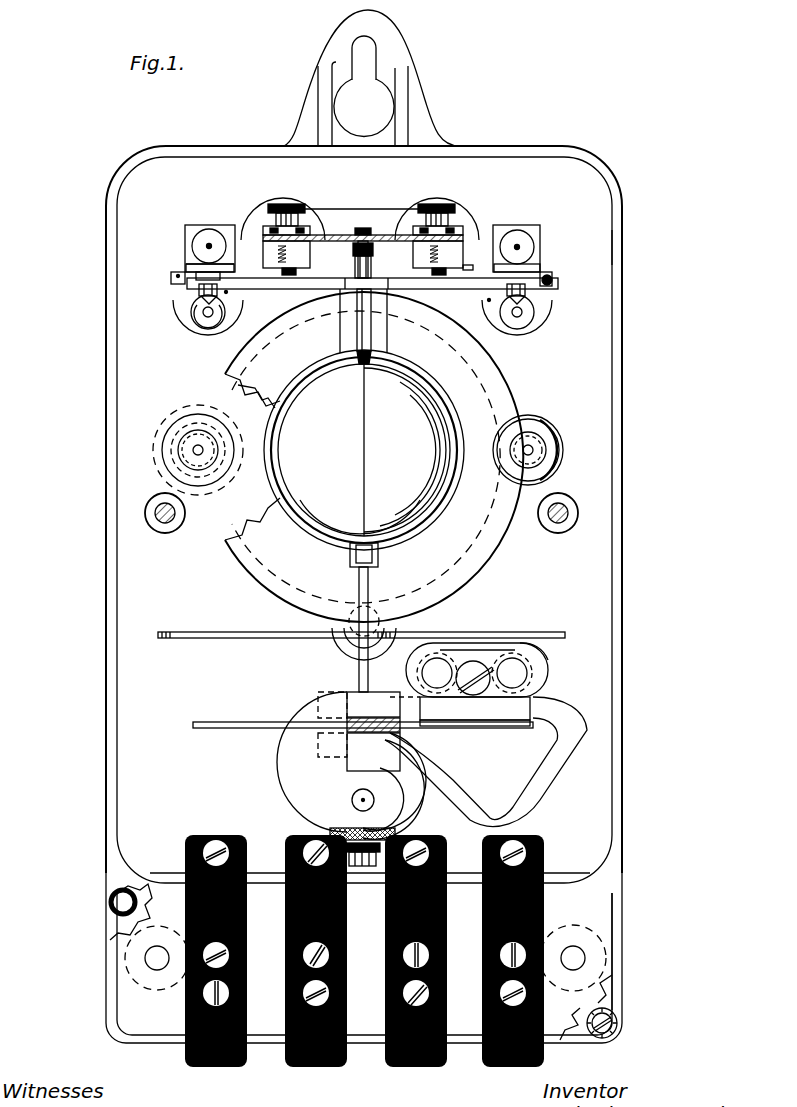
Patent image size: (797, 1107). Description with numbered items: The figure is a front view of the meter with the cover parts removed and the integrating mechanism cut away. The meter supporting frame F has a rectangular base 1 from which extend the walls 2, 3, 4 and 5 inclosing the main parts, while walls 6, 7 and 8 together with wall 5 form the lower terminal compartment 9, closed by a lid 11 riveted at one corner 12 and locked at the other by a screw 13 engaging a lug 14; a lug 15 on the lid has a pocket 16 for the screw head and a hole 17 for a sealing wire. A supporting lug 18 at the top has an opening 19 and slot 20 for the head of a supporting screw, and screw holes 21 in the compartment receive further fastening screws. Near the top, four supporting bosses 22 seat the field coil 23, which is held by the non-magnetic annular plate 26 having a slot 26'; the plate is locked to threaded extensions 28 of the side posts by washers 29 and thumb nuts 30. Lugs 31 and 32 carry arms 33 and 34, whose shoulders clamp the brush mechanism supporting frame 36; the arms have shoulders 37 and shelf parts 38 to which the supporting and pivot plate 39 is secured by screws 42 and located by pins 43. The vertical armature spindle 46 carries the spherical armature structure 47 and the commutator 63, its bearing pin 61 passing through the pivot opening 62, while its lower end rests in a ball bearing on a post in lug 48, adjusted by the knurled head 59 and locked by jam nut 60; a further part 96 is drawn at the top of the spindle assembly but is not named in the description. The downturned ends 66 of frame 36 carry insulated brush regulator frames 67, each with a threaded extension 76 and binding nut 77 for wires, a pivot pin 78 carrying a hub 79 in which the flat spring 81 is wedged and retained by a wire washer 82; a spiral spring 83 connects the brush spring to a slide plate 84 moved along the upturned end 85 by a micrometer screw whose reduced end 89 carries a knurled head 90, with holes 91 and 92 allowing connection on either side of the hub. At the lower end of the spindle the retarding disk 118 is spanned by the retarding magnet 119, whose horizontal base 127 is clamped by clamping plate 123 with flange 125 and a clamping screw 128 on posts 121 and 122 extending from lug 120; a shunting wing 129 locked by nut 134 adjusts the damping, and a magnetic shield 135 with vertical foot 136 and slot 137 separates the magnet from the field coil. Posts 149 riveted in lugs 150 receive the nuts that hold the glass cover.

The rectangular base 1 is at (606, 218).
The wall 2 is at (620, 509).
The wall 3 is at (106, 522).
The wall 4 is at (249, 150).
The wall 5 is at (276, 880).
The wall 6 is at (104, 978).
The wall 7 is at (618, 906).
The wall 8 is at (378, 1040).
The terminal compartment 9 is at (160, 1012).
The lid 11 is at (113, 906).
The corner 12 is at (105, 898).
The screw 13 is at (612, 1013).
The lug 14 is at (590, 1015).
The lug 15 is at (620, 1031).
The pocket 16 is at (620, 1024).
The hole 17 is at (618, 1036).
The supporting lug 18 is at (405, 53).
The opening 19 is at (382, 108).
The slot 20 is at (370, 46).
The screw holes 21 is at (157, 955).
The supporting bosses 22 is at (190, 426).
The field coil 23 is at (218, 416).
The annular plate 26 is at (330, 457).
The slot 26' is at (387, 324).
The threaded extensions 28 is at (536, 450).
The washers 29 is at (553, 462).
The thumb nuts 30 is at (508, 447).
The lug 31 is at (258, 218).
The lug 32 is at (465, 238).
The arm 33 is at (243, 236).
The arm 34 is at (505, 224).
The brush mechanism supporting frame 36 is at (366, 236).
The shoulders 37 is at (310, 235).
The shelf parts 38 is at (285, 268).
The supporting and pivot plate 39 is at (373, 234).
The screws 42 is at (286, 206).
The pins 43 is at (294, 204).
The armature spindle 46 is at (358, 592).
The spherical armature structure 47 is at (364, 450).
The lug 48 is at (397, 812).
The knurled head 59 is at (362, 868).
The jam nut 60 is at (326, 833).
The bearing pin 61 is at (371, 246).
The pivot opening 62 is at (374, 246).
The commutator 63 is at (378, 302).
The ends 66 is at (253, 306).
The brush regulator frame 67 is at (191, 273).
The threaded extension 76 is at (185, 300).
The binding nut 77 is at (200, 318).
The pivot pin 78 is at (191, 306).
The hub 79 is at (180, 283).
The flat spring 81 is at (311, 291).
The wire washer 82 is at (528, 320).
The spiral spring 83 is at (553, 277).
The slide plate 84 is at (185, 243).
The upturned end 85 is at (206, 243).
The reduced end 89 is at (188, 263).
The knurled head 90 is at (531, 247).
The hole 91 is at (471, 256).
The holes 92 is at (186, 291).
The core cap 96 is at (362, 228).
The retarding disk 118 is at (236, 726).
The retarding magnet 119 is at (567, 712).
The lug 120 is at (563, 643).
The post 121 is at (444, 668).
The post 122 is at (514, 667).
The clamping plate 123 is at (490, 650).
The flange 125 is at (533, 723).
The horizontal base of the damping magnet 127 is at (356, 698).
The clamping screw 128 is at (473, 688).
The shunting wing 129 is at (296, 767).
The locking nut 134 is at (392, 792).
The magnetic shield 135 is at (222, 634).
The vertical foot 136 is at (549, 662).
The slot 137 is at (386, 640).
The posts 149 is at (164, 506).
The lugs 150 is at (160, 522).
The meter supporting frame F is at (618, 238).